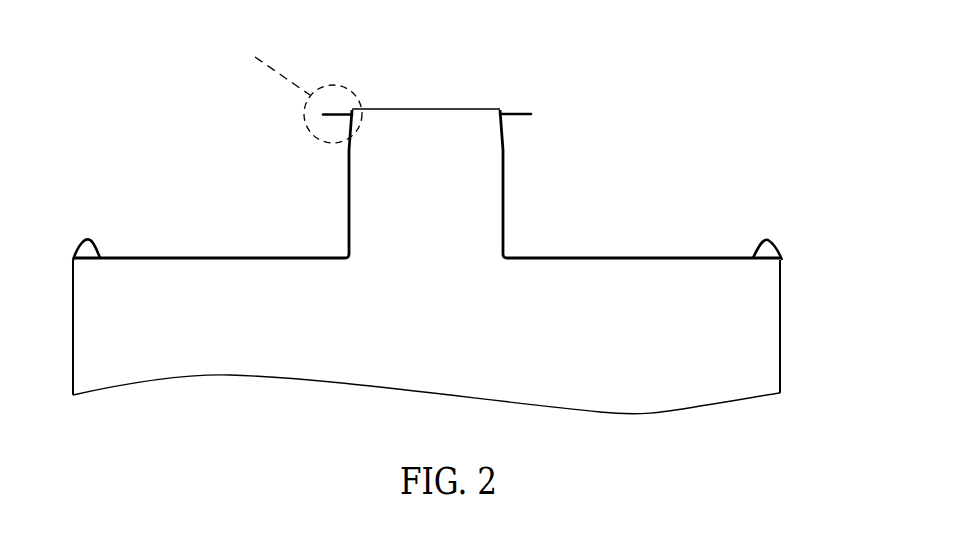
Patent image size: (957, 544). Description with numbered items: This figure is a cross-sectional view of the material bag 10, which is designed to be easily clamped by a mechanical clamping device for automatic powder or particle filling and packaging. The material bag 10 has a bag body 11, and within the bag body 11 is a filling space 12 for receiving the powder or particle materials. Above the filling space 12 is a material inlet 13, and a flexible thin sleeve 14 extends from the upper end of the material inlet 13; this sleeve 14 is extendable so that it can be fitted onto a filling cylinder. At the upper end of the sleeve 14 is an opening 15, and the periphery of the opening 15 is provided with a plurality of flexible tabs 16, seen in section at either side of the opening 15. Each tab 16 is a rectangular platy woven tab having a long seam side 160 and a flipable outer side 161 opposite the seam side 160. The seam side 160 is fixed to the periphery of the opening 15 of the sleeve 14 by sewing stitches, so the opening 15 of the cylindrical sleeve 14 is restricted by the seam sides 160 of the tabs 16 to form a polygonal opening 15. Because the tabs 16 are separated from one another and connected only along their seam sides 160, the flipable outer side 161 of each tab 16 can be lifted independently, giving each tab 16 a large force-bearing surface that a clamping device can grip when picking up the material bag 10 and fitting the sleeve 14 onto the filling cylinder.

The material bag 10 is at (465, 214).
The bag body 11 is at (780, 303).
The filling space 12 is at (687, 370).
The material inlet 13 is at (468, 243).
The sleeve 14 is at (505, 170).
The opening 15 is at (470, 113).
The tab 16 is at (333, 113).
The seam side 160 is at (355, 110).
The flipable outer side 161 is at (321, 112).